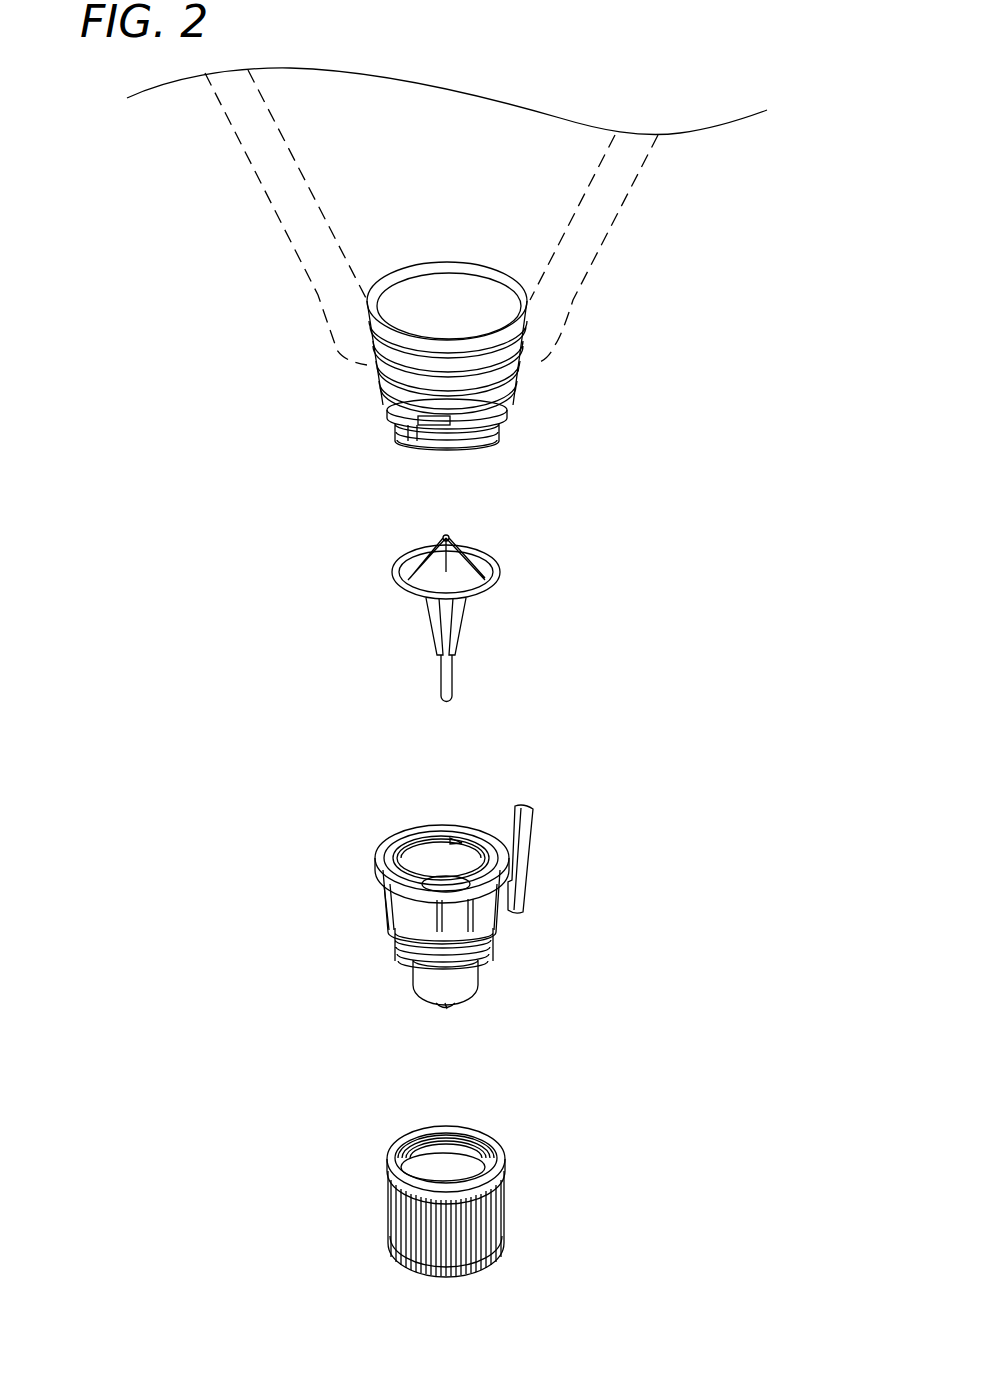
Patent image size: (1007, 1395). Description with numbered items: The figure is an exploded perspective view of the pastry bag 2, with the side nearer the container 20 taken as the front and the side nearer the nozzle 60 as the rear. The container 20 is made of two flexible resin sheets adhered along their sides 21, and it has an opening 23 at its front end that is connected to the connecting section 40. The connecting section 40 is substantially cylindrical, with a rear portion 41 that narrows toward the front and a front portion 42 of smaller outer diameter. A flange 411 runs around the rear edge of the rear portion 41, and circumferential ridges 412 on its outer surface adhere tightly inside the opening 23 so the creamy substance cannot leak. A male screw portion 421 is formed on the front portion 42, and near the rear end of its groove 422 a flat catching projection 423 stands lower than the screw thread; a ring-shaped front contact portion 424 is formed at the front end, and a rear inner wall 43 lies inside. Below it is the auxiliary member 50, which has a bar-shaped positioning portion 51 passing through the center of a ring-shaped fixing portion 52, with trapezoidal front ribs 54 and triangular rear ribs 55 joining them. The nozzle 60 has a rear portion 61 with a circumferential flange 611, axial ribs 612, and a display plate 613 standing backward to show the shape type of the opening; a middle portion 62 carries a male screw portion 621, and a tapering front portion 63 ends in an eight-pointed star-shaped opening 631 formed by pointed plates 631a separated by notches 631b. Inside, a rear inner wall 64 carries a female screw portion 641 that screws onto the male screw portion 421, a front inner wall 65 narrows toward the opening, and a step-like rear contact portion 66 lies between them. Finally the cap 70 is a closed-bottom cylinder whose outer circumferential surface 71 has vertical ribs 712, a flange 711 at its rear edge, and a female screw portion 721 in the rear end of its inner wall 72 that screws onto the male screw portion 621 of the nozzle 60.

The pastry bag 2 is at (205, 290).
The container 20 is at (443, 216).
The sides 21 is at (285, 203).
The opening 23 is at (432, 290).
The connecting section 40 is at (455, 334).
The rear portion 41 is at (523, 286).
The flange 411 is at (540, 297).
The ridges 412 is at (528, 352).
The front portion 42 is at (451, 451).
The male screw portion 421 is at (490, 440).
The groove 422 is at (452, 421).
The catching projection 423 is at (405, 417).
The front contact portion 424 is at (405, 437).
The rear inner wall 43 is at (475, 293).
The auxiliary member 50 is at (416, 593).
The positioning portion 51 is at (442, 684).
The fixing portion 52 is at (392, 578).
The front ribs 54 is at (455, 617).
The rear ribs 55 is at (455, 560).
The nozzle 60 is at (423, 906).
The rear portion 61 is at (377, 916).
The flange 611 is at (375, 860).
The ribs 612 is at (400, 915).
The display plate 613 is at (530, 815).
The middle portion 62 is at (450, 942).
The male screw portion 621 is at (505, 930).
The front portion 63 is at (461, 1007).
The opening 631 is at (462, 1012).
The pointed plates 631a is at (443, 1009).
The notches 631b is at (443, 1012).
The rear inner wall 64 is at (434, 838).
The female screw portion 641 is at (463, 845).
The front inner wall 65 is at (448, 885).
The rear contact portion 66 is at (423, 877).
The cap 70 is at (413, 1167).
The outer circumferential surface 71 is at (502, 1193).
The flange 711 is at (505, 1165).
The vertical ribs 712 is at (478, 1232).
The inner wall 72 is at (457, 1172).
The female screw portion 721 is at (400, 1138).